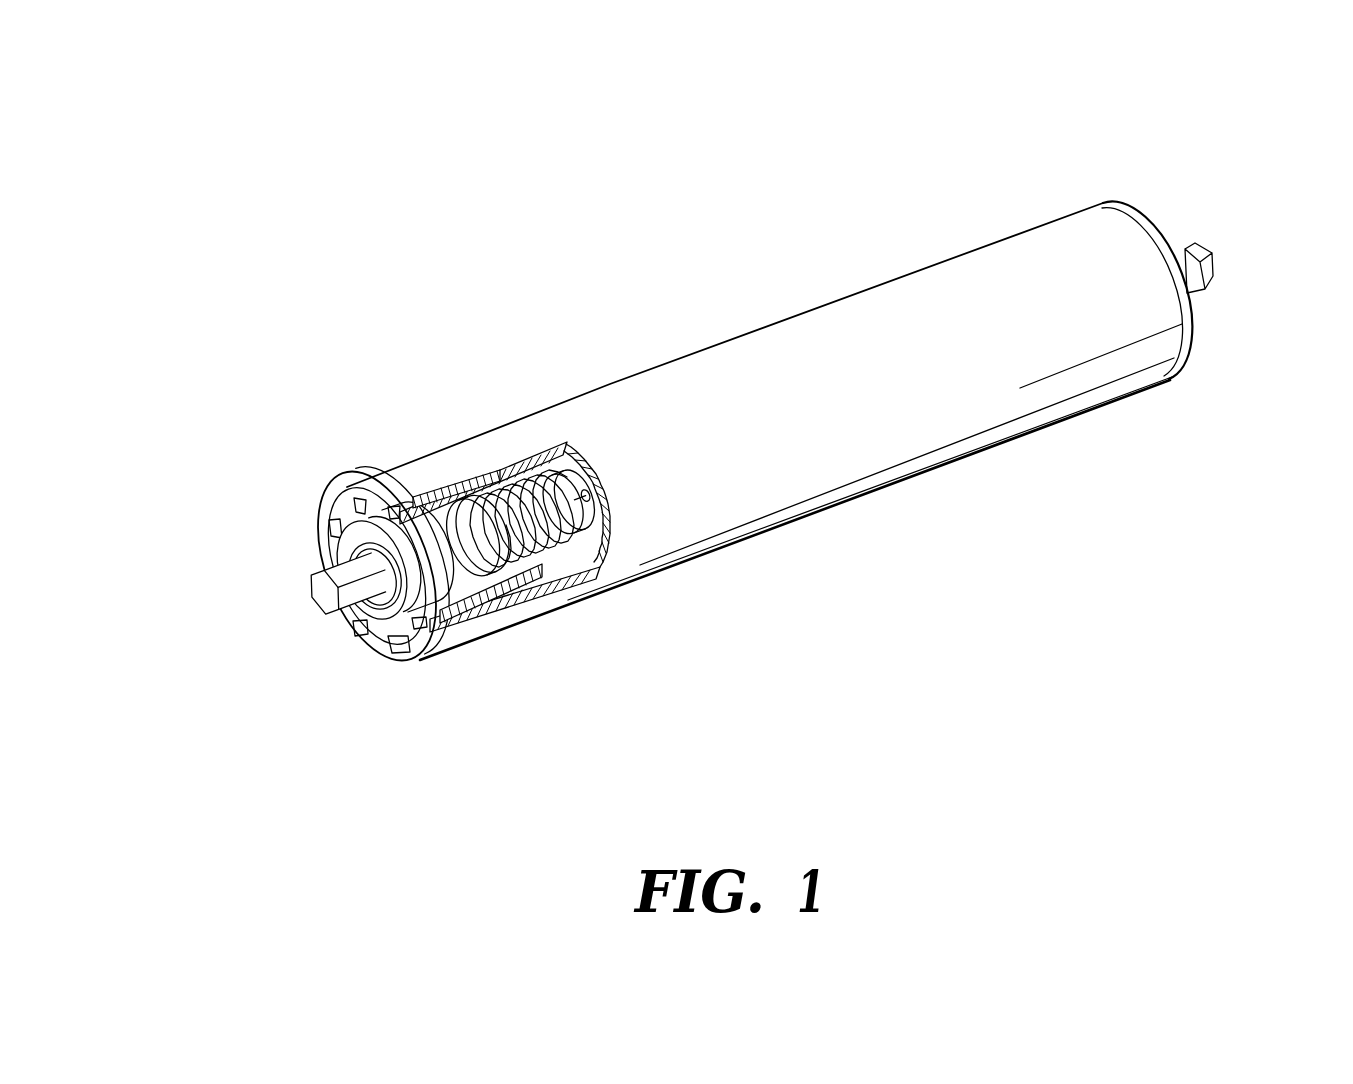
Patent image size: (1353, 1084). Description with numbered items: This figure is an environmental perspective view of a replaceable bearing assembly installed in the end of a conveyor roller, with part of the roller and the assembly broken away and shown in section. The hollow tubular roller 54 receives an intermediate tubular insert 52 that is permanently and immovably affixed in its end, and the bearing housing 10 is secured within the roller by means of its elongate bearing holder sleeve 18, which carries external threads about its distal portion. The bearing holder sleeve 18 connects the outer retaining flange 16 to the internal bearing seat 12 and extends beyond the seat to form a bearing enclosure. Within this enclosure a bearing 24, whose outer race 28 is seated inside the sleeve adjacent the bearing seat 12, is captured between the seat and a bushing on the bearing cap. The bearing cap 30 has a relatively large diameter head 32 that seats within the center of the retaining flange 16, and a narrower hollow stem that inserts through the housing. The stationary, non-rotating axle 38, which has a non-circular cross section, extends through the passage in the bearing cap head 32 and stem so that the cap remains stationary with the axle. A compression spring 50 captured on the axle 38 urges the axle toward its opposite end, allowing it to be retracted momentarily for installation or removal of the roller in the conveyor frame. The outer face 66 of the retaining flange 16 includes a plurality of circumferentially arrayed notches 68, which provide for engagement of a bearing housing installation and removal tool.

The bearing housing 10 is at (205, 712).
The internal bearing seat 12 is at (466, 602).
The outer retaining flange 16 is at (322, 512).
The bearing holder sleeve 18 is at (462, 508).
The bearing 24 is at (481, 505).
The outer race 28 is at (443, 503).
The bearing cap 30 is at (397, 530).
The bearing cap head 32 is at (343, 548).
The axle 38 is at (317, 600).
The compression spring 50 is at (558, 478).
The intermediate tubular insert 52 is at (1141, 208).
The hollow tubular roller 54 is at (829, 308).
The outer face 66 is at (380, 503).
The notches 68 is at (367, 630).